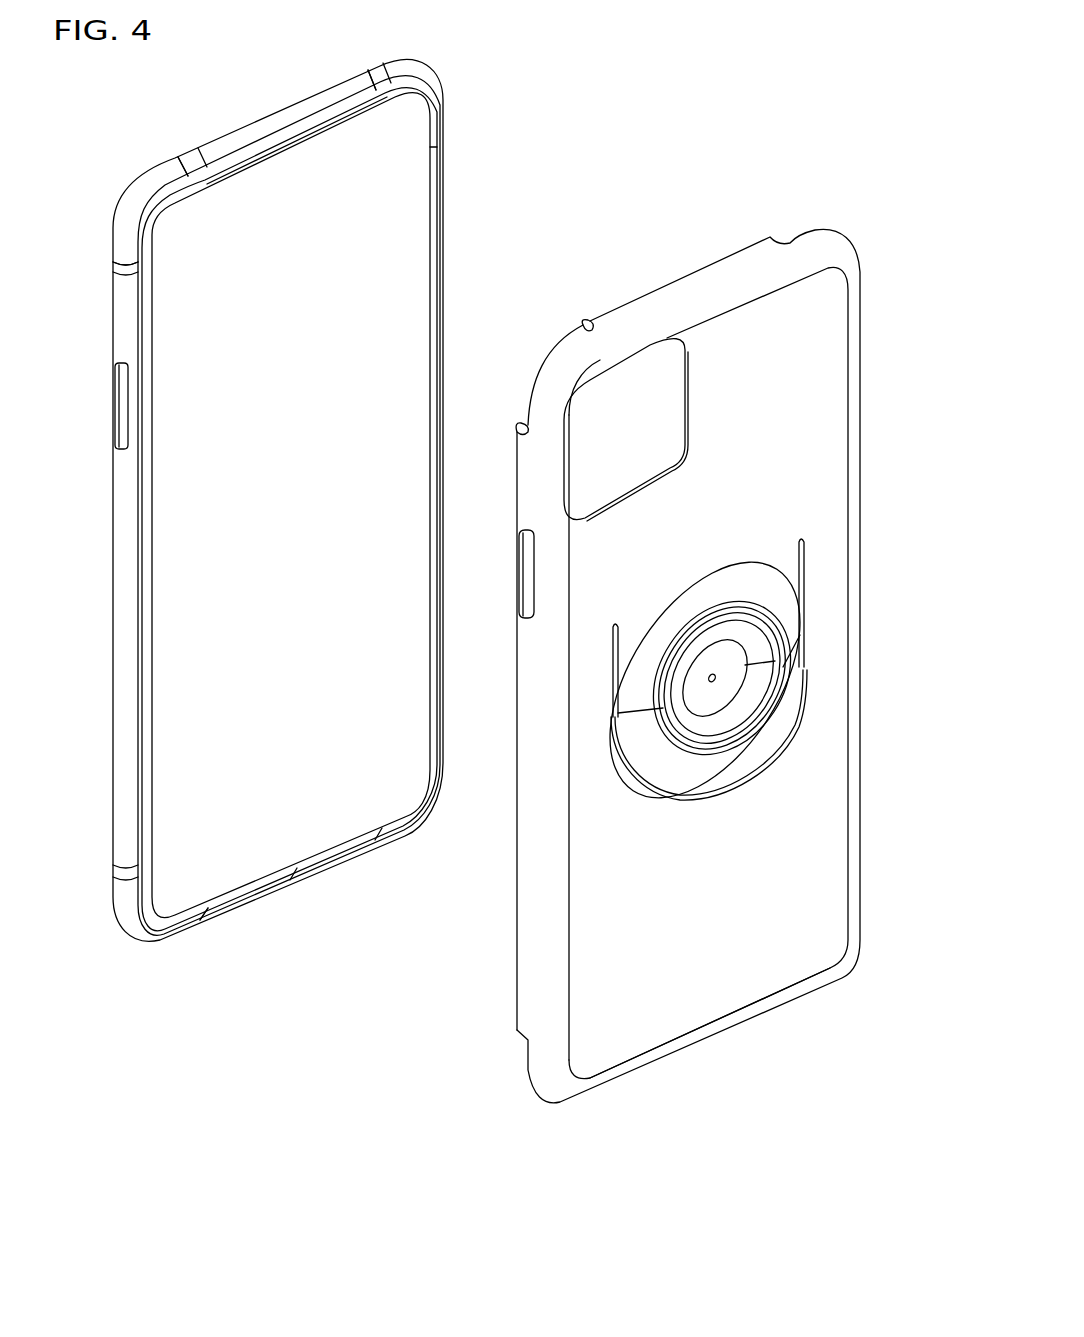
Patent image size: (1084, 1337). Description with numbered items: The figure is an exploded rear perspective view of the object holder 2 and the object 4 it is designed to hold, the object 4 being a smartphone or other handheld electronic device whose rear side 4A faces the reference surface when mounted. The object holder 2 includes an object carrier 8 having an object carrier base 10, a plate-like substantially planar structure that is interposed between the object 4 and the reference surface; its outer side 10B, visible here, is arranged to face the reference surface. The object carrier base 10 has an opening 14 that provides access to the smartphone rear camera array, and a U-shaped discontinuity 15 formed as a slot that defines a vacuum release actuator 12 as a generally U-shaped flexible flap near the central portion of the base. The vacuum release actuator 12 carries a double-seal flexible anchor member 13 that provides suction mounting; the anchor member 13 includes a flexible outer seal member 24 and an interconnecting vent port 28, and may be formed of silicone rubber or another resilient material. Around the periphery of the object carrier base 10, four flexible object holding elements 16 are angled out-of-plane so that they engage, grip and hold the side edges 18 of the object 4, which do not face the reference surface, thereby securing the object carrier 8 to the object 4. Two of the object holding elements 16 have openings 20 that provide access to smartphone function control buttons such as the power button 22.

The object holder 2 is at (705, 683).
The object 4 is at (172, 132).
The rear side of the object 4A is at (245, 805).
The object carrier 8 is at (878, 307).
The object carrier base 10 is at (824, 462).
The outer side of the object carrier base 10B is at (700, 985).
The vacuum release actuator 12 is at (782, 562).
The double-seal flexible anchor member 13 is at (752, 678).
The opening 14 is at (646, 486).
The U-shaped discontinuity 15 is at (705, 790).
The object holding elements 16 is at (697, 295).
The side edges 18 is at (318, 105).
The openings 20 is at (527, 568).
The power button 22 is at (118, 413).
The outer seal member 24 is at (725, 605).
The vent port 28 is at (714, 676).